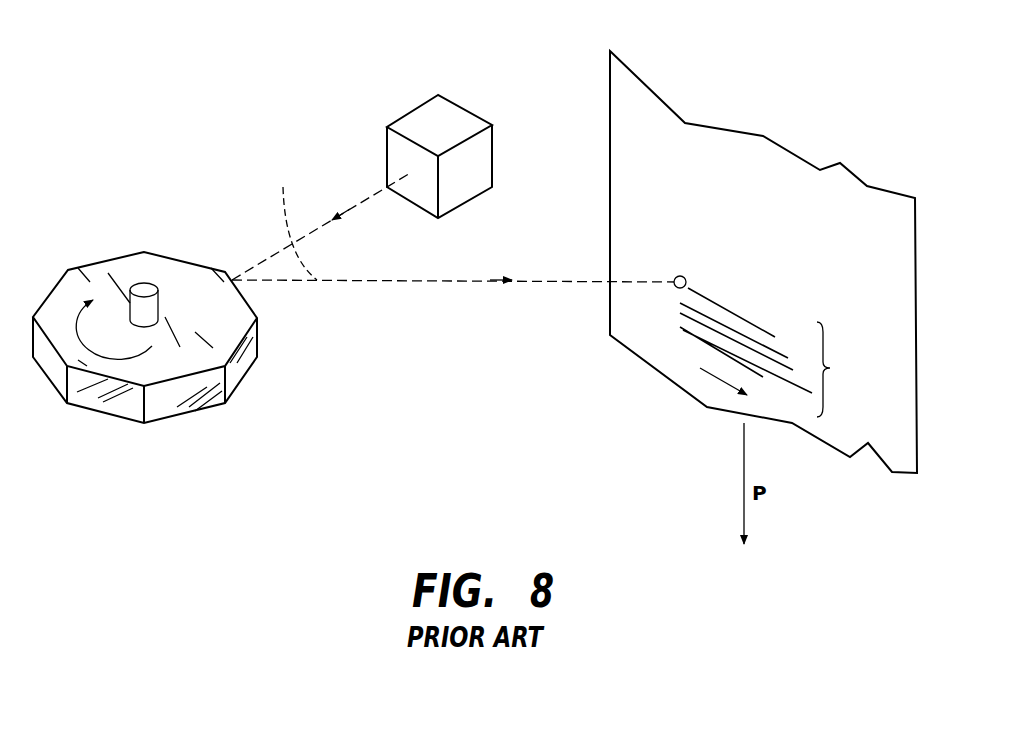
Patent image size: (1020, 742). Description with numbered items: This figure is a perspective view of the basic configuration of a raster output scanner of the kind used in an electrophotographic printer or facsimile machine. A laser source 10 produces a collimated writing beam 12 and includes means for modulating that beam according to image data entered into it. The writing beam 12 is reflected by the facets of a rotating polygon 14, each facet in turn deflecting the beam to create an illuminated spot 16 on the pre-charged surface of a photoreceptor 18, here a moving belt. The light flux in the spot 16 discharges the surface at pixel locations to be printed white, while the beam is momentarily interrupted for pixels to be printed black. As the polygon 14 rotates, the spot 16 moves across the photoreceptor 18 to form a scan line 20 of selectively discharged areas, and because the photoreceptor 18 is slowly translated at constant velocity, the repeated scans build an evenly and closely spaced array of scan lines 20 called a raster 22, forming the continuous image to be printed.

The laser source 10 is at (418, 115).
The writing beam 12 is at (298, 221).
The rotating polygon 14 is at (167, 265).
The illuminated spot 16 is at (687, 278).
The photoreceptor 18 is at (645, 100).
The scan line 20 is at (735, 312).
The raster 22 is at (832, 369).